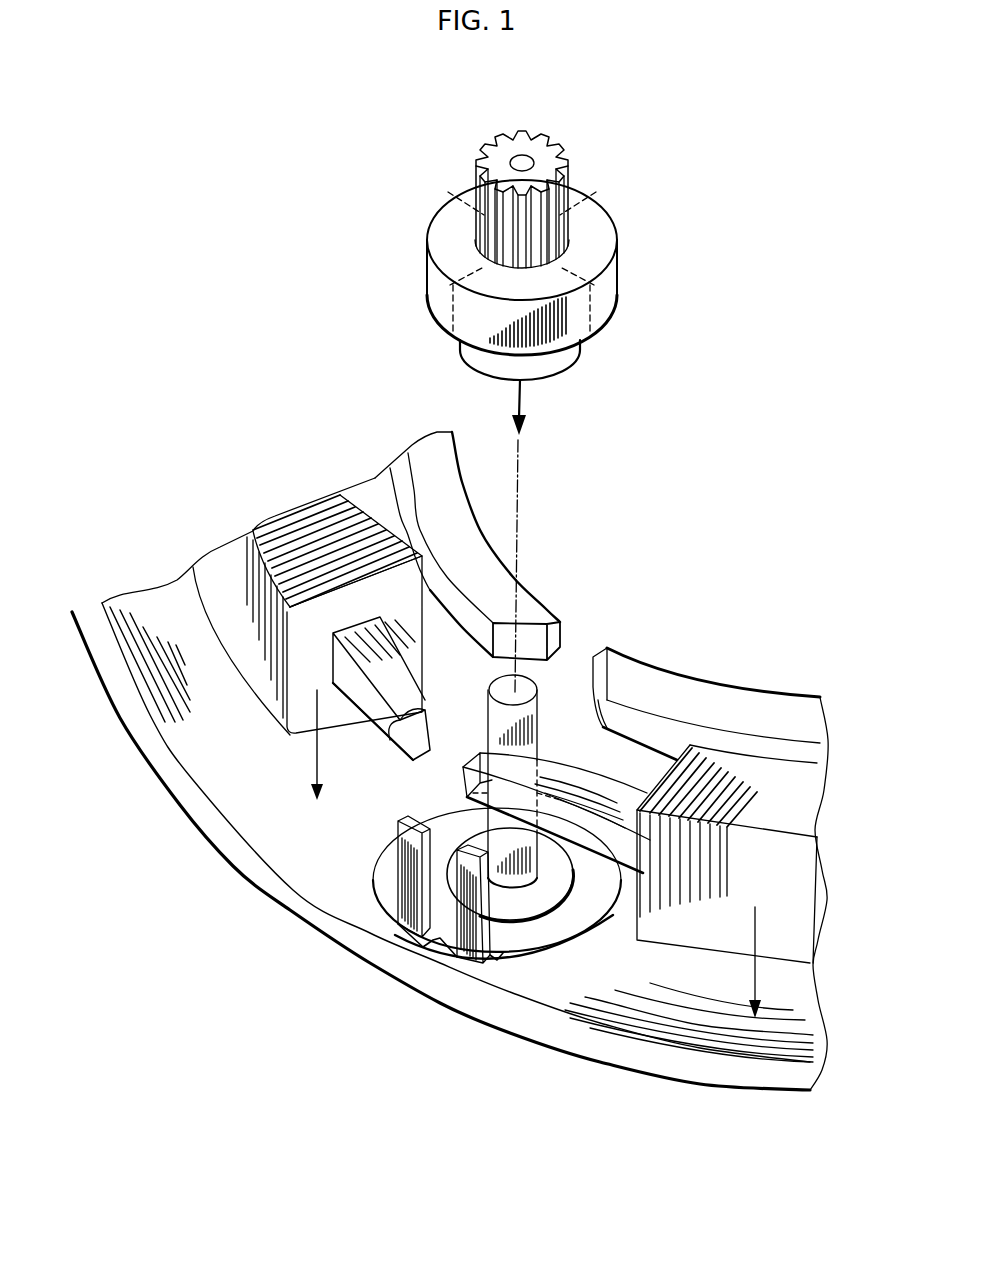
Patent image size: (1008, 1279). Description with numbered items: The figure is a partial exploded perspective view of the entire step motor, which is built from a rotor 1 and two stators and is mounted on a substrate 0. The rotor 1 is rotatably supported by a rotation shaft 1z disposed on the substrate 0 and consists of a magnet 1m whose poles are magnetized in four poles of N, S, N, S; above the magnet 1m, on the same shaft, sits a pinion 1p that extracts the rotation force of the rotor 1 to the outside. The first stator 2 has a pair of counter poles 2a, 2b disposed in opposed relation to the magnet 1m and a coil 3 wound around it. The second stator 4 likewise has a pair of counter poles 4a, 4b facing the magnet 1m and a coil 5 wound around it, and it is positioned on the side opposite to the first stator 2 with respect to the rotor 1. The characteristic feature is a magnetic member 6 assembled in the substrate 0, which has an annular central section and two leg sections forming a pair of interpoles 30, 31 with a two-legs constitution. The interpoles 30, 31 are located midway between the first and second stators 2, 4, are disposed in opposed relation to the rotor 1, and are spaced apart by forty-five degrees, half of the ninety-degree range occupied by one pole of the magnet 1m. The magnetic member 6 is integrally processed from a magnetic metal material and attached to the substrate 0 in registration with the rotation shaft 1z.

The substrate 0 is at (803, 1078).
The rotor 1 is at (557, 383).
The magnet 1m is at (617, 274).
The pinion 1p is at (520, 137).
The rotation shaft 1z is at (542, 717).
The first stator 2 is at (641, 808).
The counter pole 2a is at (627, 670).
The counter pole 2b is at (613, 733).
The coil 3 is at (770, 778).
The second stator 4 is at (481, 546).
The counter pole 4a is at (537, 615).
The counter pole 4b is at (412, 735).
The coil 5 is at (317, 513).
The magnetic member 6 is at (537, 950).
The interpole 30 is at (413, 865).
The interpole 31 is at (453, 935).